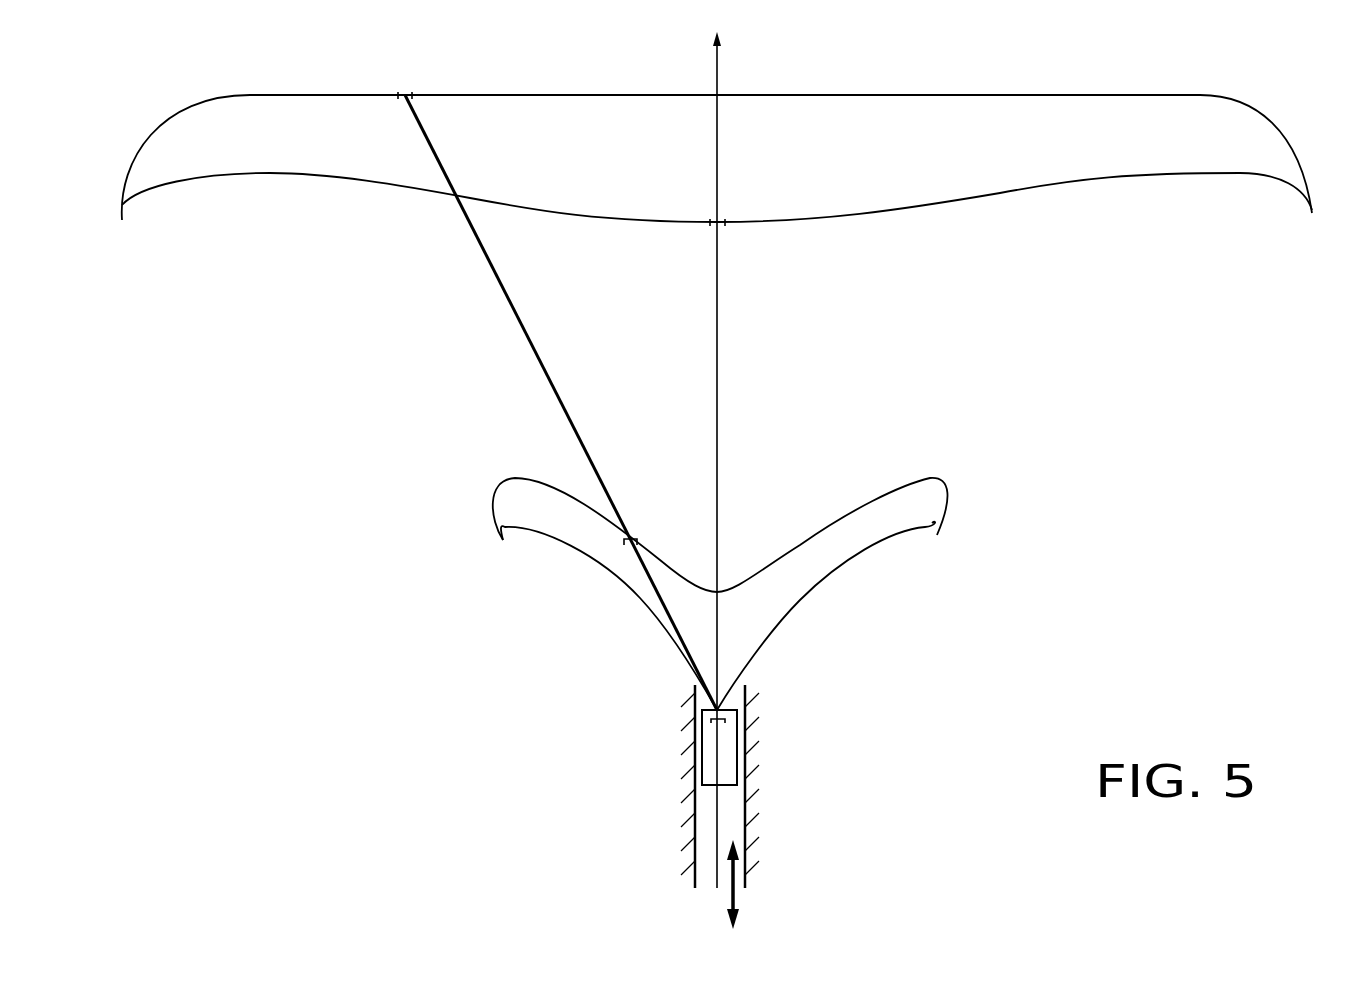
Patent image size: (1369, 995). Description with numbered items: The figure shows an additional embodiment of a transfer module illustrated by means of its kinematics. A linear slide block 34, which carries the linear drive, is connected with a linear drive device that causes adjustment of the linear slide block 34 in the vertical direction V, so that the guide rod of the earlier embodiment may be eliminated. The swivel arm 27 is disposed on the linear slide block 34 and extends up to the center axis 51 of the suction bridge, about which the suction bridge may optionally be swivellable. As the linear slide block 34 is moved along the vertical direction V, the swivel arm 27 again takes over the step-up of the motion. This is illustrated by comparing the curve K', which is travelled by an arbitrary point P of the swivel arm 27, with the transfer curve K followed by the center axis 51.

The transfer curve K is at (737, 156).
The curve travelled by point P K' is at (749, 574).
The vertical direction V is at (738, 880).
The swivel arm 27 is at (522, 323).
The center axis of the suction bridge 51 is at (406, 94).
The arbitrary point of the swivel arm P is at (634, 540).
The linear slide block 34 is at (727, 743).